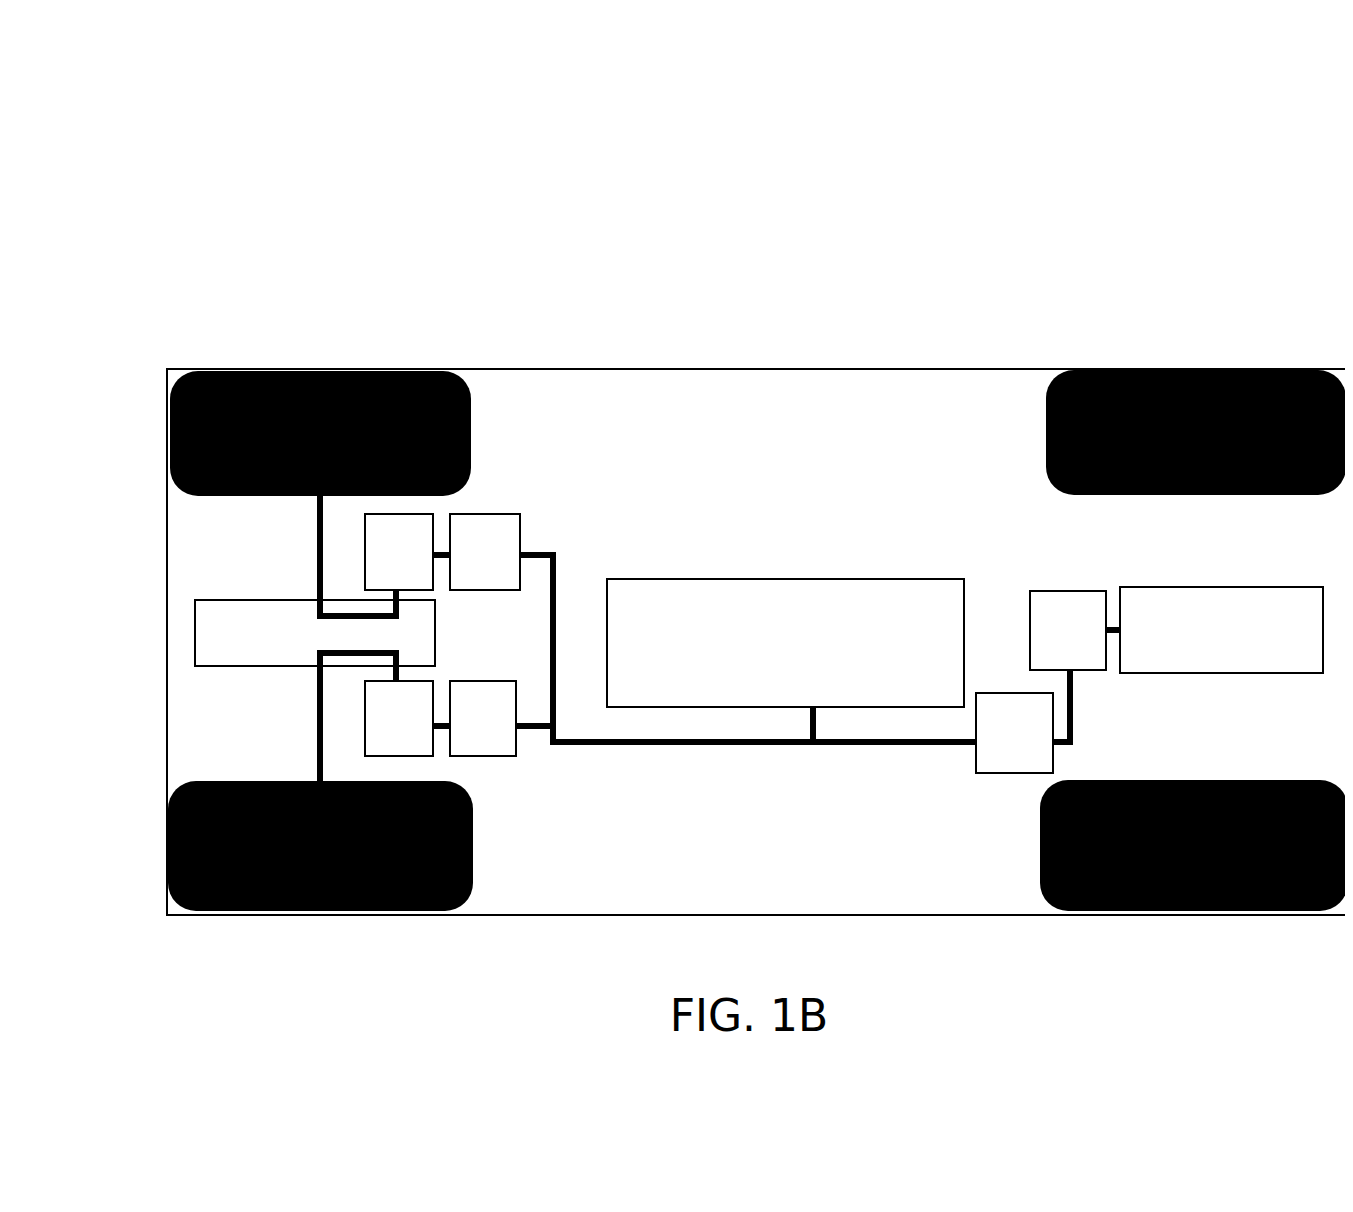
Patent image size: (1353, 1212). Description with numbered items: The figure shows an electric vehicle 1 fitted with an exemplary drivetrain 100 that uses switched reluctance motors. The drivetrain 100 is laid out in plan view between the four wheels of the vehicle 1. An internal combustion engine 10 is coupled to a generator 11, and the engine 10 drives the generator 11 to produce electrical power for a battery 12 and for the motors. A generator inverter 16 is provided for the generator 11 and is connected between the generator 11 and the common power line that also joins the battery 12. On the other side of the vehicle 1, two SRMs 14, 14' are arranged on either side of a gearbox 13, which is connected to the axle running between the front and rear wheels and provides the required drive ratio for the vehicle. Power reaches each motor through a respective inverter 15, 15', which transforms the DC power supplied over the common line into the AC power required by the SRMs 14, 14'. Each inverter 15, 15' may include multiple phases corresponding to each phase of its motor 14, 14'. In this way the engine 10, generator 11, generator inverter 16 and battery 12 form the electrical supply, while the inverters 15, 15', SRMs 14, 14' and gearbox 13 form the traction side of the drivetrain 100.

The electric vehicle 1 is at (223, 245).
The drivetrain 100 is at (756, 642).
The internal combustion engine 10 is at (1221, 630).
The generator 11 is at (1068, 630).
The battery 12 is at (785, 643).
The gearbox 13 is at (315, 633).
The SRM 14 is at (399, 552).
The SRM 14' is at (399, 718).
The inverter 15 is at (485, 552).
The inverter 15' is at (483, 718).
The generator inverter 16 is at (1014, 733).